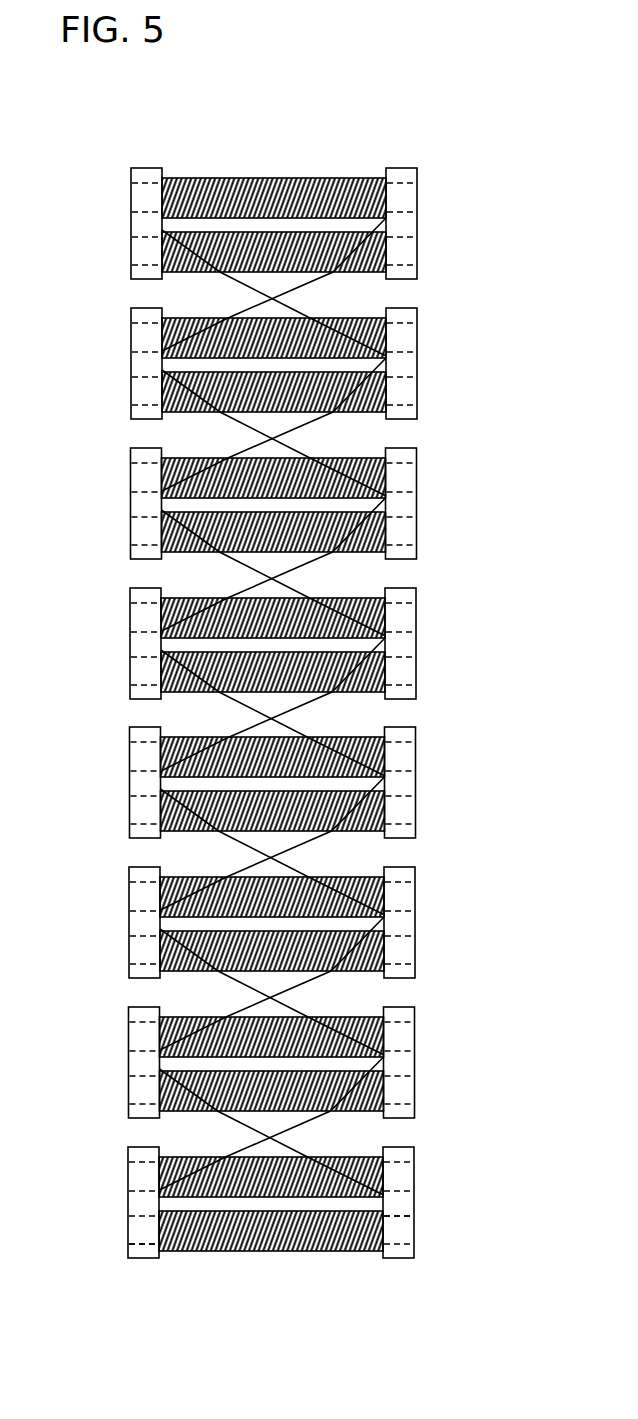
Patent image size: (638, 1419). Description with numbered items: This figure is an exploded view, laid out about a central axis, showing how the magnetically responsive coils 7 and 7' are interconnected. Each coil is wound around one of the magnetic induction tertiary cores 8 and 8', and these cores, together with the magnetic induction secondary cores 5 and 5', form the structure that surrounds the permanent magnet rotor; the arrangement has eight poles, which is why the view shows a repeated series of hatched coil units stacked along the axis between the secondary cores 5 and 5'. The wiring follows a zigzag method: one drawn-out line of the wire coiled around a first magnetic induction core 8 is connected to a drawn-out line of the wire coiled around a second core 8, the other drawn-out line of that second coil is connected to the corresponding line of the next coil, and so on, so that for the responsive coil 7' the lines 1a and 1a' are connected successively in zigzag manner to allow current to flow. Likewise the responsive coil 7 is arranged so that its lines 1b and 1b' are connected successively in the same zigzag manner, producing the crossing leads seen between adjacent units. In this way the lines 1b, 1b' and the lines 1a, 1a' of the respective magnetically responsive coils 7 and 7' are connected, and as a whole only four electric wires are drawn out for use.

The magnetic induction secondary core 5 is at (112, 222).
The magnetic induction secondary core 5' is at (441, 219).
The magnetically responsive coil 7 is at (113, 247).
The magnetically responsive coil 7' is at (442, 224).
The magnetic induction tertiary core 8 is at (274, 151).
The magnetic induction tertiary core 8' is at (329, 278).
The line of responsive coil 7' 1a is at (399, 160).
The line of responsive coil 7 1b is at (110, 234).
The line of responsive coil 7' 1a' is at (426, 1221).
The line of responsive coil 7 1b' is at (151, 1307).